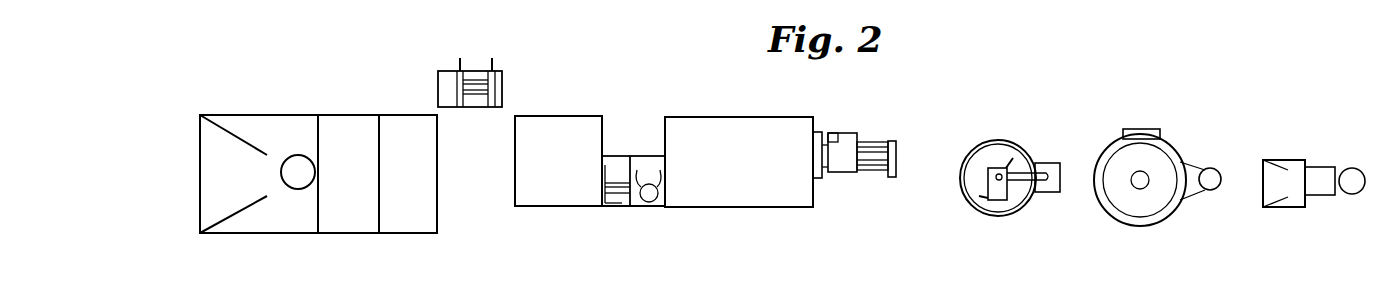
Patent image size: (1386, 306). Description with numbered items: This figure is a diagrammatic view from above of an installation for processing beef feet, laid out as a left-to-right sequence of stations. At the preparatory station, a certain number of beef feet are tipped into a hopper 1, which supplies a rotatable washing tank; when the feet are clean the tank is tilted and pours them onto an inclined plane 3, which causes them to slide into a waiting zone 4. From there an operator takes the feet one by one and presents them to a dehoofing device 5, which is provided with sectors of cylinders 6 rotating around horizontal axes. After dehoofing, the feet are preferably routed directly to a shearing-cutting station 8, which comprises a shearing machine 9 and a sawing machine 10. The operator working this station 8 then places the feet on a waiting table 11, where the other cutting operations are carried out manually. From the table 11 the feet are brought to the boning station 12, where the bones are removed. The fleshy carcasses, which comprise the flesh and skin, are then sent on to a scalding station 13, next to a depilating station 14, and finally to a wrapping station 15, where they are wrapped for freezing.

The hopper 1 is at (277, 224).
The inclined plane 3 is at (350, 224).
The waiting zone 4 is at (412, 224).
The dehoofing device 5 is at (503, 78).
The sectors of cylinders 6 is at (477, 86).
The shearing-cutting station 8 is at (638, 156).
The shearing machine 9 is at (618, 207).
The sawing machine 10 is at (652, 207).
The waiting table 11 is at (737, 132).
The boning station 12 is at (860, 178).
The scalding station 13 is at (993, 155).
The depilating station 14 is at (1152, 165).
The wrapping station 15 is at (1320, 165).